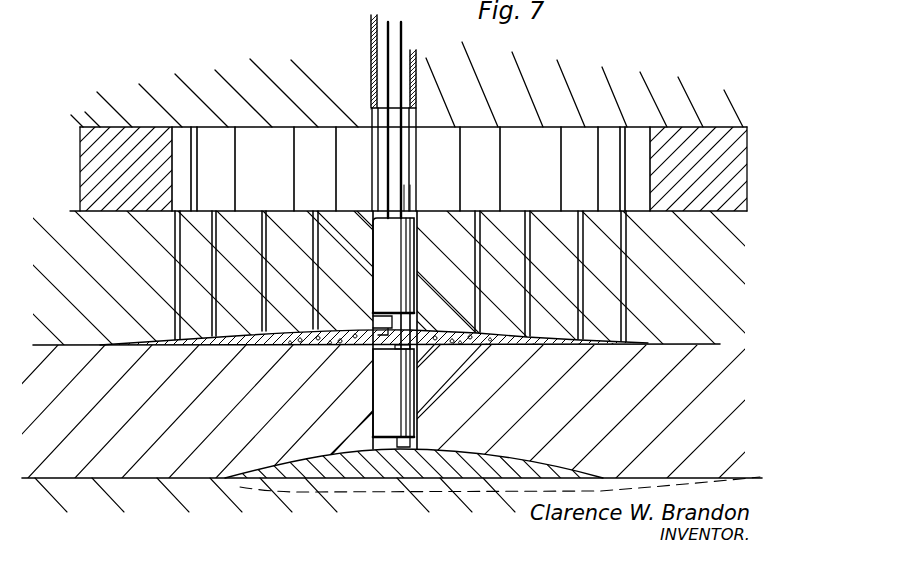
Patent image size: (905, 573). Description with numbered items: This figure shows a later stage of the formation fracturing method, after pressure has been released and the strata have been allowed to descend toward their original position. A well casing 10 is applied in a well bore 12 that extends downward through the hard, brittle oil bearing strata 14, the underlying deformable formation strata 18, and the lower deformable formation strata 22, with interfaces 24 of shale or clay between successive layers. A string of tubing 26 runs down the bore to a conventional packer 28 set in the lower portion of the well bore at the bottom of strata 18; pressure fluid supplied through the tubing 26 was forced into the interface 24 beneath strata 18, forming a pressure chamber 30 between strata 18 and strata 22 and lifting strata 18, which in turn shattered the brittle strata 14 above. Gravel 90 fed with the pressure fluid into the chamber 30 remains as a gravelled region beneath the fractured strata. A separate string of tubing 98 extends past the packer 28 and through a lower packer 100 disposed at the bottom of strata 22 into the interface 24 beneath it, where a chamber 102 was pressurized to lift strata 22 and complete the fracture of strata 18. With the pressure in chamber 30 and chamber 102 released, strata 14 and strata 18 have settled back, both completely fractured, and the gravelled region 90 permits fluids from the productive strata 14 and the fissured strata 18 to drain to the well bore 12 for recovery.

The well casing 10 is at (415, 58).
The well bore 12 is at (416, 118).
The oil bearing strata 14 is at (115, 148).
The underlying deformable formation strata 18 is at (135, 313).
The lower deformable formation strata 22 is at (135, 456).
The interface 24 is at (190, 481).
The string of tubing 26 is at (372, 50).
The packer 28 is at (407, 283).
The pressure chamber 30 is at (342, 338).
The gravel 90 is at (333, 333).
The separate string of tubing 98 is at (404, 193).
The lower packer 100 is at (407, 415).
The chamber 102 is at (357, 468).